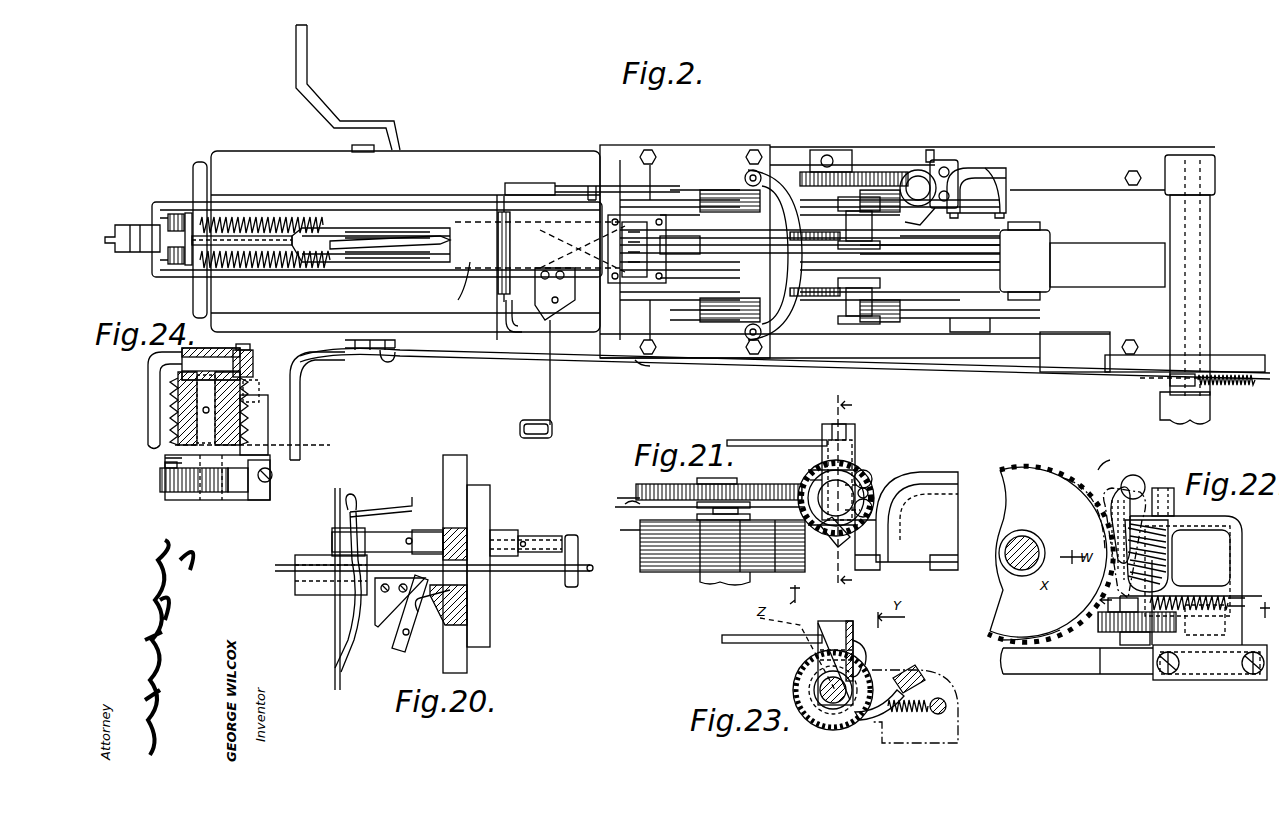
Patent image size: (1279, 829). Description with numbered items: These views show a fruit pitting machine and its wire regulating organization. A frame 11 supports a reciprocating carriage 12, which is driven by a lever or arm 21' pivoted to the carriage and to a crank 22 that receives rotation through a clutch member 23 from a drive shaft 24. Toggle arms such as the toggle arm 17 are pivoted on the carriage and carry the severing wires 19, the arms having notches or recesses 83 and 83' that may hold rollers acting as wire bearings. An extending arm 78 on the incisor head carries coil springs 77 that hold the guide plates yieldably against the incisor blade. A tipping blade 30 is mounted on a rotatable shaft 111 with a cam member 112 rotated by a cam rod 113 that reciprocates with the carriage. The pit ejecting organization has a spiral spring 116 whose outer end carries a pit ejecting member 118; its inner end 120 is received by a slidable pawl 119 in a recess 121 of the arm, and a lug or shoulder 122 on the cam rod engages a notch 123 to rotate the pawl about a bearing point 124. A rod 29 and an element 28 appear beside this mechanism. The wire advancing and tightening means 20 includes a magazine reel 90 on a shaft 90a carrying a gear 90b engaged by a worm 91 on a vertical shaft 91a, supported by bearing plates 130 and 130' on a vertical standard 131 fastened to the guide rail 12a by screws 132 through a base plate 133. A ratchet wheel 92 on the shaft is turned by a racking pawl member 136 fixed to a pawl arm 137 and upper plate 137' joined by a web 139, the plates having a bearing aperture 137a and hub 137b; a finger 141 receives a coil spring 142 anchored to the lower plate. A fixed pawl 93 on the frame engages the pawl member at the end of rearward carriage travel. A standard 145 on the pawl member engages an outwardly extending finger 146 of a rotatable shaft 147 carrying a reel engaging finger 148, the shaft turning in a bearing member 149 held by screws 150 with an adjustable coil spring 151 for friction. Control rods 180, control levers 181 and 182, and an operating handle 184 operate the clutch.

In FIG. 2, the frame 11 is at (1226, 180).
In FIG. 2, the reciprocating carriage 12 is at (975, 285).
In FIG. 22, the reciprocating carriage 12 is at (1078, 665).
In FIG. 2, the guide rail 12a is at (839, 256).
In FIG. 22, the guide rail 12a is at (1122, 668).
In FIG. 2, the toggle arm 17 is at (396, 238).
In FIG. 2, the severing wire 19 is at (480, 214).
In FIG. 2, the wire advancing and tightening means 20 is at (932, 148).
In FIG. 22, the wire advancing and tightening means 20 is at (1105, 476).
In FIG. 2, the tube 21' is at (930, 262).
In FIG. 2, the crank 22 is at (1082, 264).
In FIG. 21, the crank 22 is at (784, 594).
In FIG. 22, the clutch member 23 is at (1187, 615).
In FIG. 2, the drive shaft 24 is at (1205, 422).
In FIG. 21, the drive shaft 24 is at (855, 491).
In FIG. 2, the link 28 is at (588, 186).
In FIG. 2, the rod 29 is at (538, 184).
In FIG. 20, the rod 29 is at (408, 502).
In FIG. 2, the tipping blade 30 is at (497, 325).
In FIG. 2, the coil springs 77 is at (250, 216).
In FIG. 20, the extending arm 78 is at (443, 488).
In FIG. 2, the notch or recess 83 is at (321, 304).
In FIG. 2, the notch or recess 83' is at (391, 187).
In FIG. 21, the magazine reel 90 is at (640, 520).
In FIG. 22, the magazine reel 90 is at (1010, 615).
In FIG. 21, the shaft 90a is at (735, 482).
In FIG. 21, the gear 90b is at (648, 488).
In FIG. 22, the gear 90b is at (1000, 638).
In FIG. 2, the worm 91 is at (905, 172).
In FIG. 24, the worm 91 is at (248, 428).
In FIG. 21, the worm 91 is at (818, 475).
In FIG. 22, the worm 91 is at (1170, 510).
In FIG. 24, the vertical shaft 91a is at (200, 423).
In FIG. 21, the vertical shaft 91a is at (866, 478).
In FIG. 23, the vertical shaft 91a is at (820, 690).
In FIG. 2, the ratchet wheel 92 is at (950, 152).
In FIG. 21, the ratchet wheel 92 is at (862, 470).
In FIG. 22, the ratchet wheel 92 is at (1100, 632).
In FIG. 23, the ratchet wheel 92 is at (832, 730).
In FIG. 2, the fixed pawl 93 is at (880, 150).
In FIG. 21, the fixed pawl 93 is at (785, 440).
In FIG. 23, the fixed pawl 93 is at (752, 643).
In FIG. 20, the rotatable shaft 111 is at (536, 536).
In FIG. 20, the cam member 112 is at (572, 587).
In FIG. 20, the cam rod 113 is at (530, 571).
In FIG. 2, the spiral spring 116 is at (559, 299).
In FIG. 2, the pit ejecting member 118 is at (536, 386).
In FIG. 20, the slidable pawl 119 is at (400, 650).
In FIG. 20, the inner end 120 is at (420, 640).
In FIG. 20, the recess 121 is at (462, 598).
In FIG. 20, the lug or shoulder 122 is at (470, 560).
In FIG. 20, the notch 123 is at (430, 560).
In FIG. 20, the bearing point 124 is at (445, 622).
In FIG. 2, the horizontal bearing plate 130 is at (976, 184).
In FIG. 21, the horizontal bearing plate 130 is at (927, 521).
In FIG. 22, the horizontal bearing plate 130 is at (1195, 569).
In FIG. 2, the lower horizontal bearing plate 130' is at (827, 271).
In FIG. 21, the lower horizontal bearing plate 130' is at (951, 517).
In FIG. 23, the lower horizontal bearing plate 130' is at (937, 706).
In FIG. 22, the vertical standard 131 is at (1225, 557).
In FIG. 22, the screws 132 is at (1165, 675).
In FIG. 22, the base plate 133 is at (1205, 665).
In FIG. 24, the racking pawl member 136 is at (262, 500).
In FIG. 23, the racking pawl member 136 is at (866, 648).
In FIG. 24, the pawl arm 137 is at (217, 500).
In FIG. 24, the upper plate 137' is at (229, 498).
In FIG. 23, the upper plate 137' is at (844, 651).
In FIG. 24, the bearing aperture 137a is at (256, 445).
In FIG. 24, the hub 137b is at (172, 500).
In FIG. 24, the web 139 is at (272, 478).
In FIG. 24, the extending finger 141 is at (165, 460).
In FIG. 23, the extending finger 141 is at (830, 722).
In FIG. 24, the coil spring 142 is at (165, 466).
In FIG. 23, the coil spring 142 is at (920, 712).
In FIG. 24, the standard 145 is at (268, 400).
In FIG. 21, the standard 145 is at (855, 440).
In FIG. 23, the standard 145 is at (878, 643).
In FIG. 24, the outwardly extending finger 146 is at (259, 390).
In FIG. 21, the outwardly extending finger 146 is at (855, 450).
In FIG. 24, the rotatable shaft 147 is at (245, 355).
In FIG. 21, the rotatable shaft 147 is at (801, 479).
In FIG. 24, the reel engaging finger 148 is at (148, 398).
In FIG. 21, the reel engaging finger 148 is at (838, 547).
In FIG. 22, the reel engaging finger 148 is at (1080, 520).
In FIG. 24, the bearing member 149 is at (226, 352).
In FIG. 21, the screws 150 is at (872, 478).
In FIG. 22, the screws 150 is at (1162, 488).
In FIG. 21, the adjustable coil spring 151 is at (870, 493).
In FIG. 2, the control rod 180 is at (364, 350).
In FIG. 24, the control lever 181 is at (300, 425).
In FIG. 2, the control lever 182 is at (385, 362).
In FIG. 2, the operating handle 184 is at (308, 70).